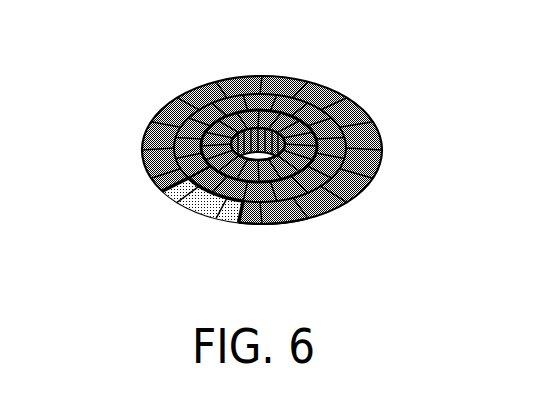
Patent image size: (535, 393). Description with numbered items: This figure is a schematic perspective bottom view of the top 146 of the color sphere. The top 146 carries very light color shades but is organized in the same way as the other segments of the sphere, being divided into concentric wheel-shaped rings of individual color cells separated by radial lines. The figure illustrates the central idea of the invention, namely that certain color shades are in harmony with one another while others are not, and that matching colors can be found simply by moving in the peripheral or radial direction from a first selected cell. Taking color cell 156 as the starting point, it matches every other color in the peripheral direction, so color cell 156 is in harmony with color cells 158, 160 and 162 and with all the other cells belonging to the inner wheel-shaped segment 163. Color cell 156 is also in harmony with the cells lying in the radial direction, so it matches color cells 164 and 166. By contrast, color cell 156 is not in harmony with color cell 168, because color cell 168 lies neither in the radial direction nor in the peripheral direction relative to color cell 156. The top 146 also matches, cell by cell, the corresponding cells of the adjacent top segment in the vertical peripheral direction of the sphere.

The top 146 is at (345, 75).
The color cell 156 is at (186, 165).
The color cell 158 is at (257, 223).
The color cell 160 is at (288, 222).
The color cell 162 is at (166, 122).
The inner wheel-shaped segment 163 is at (277, 128).
The color cell 164 is at (193, 202).
The color cell 166 is at (217, 212).
The color cell 168 is at (202, 175).